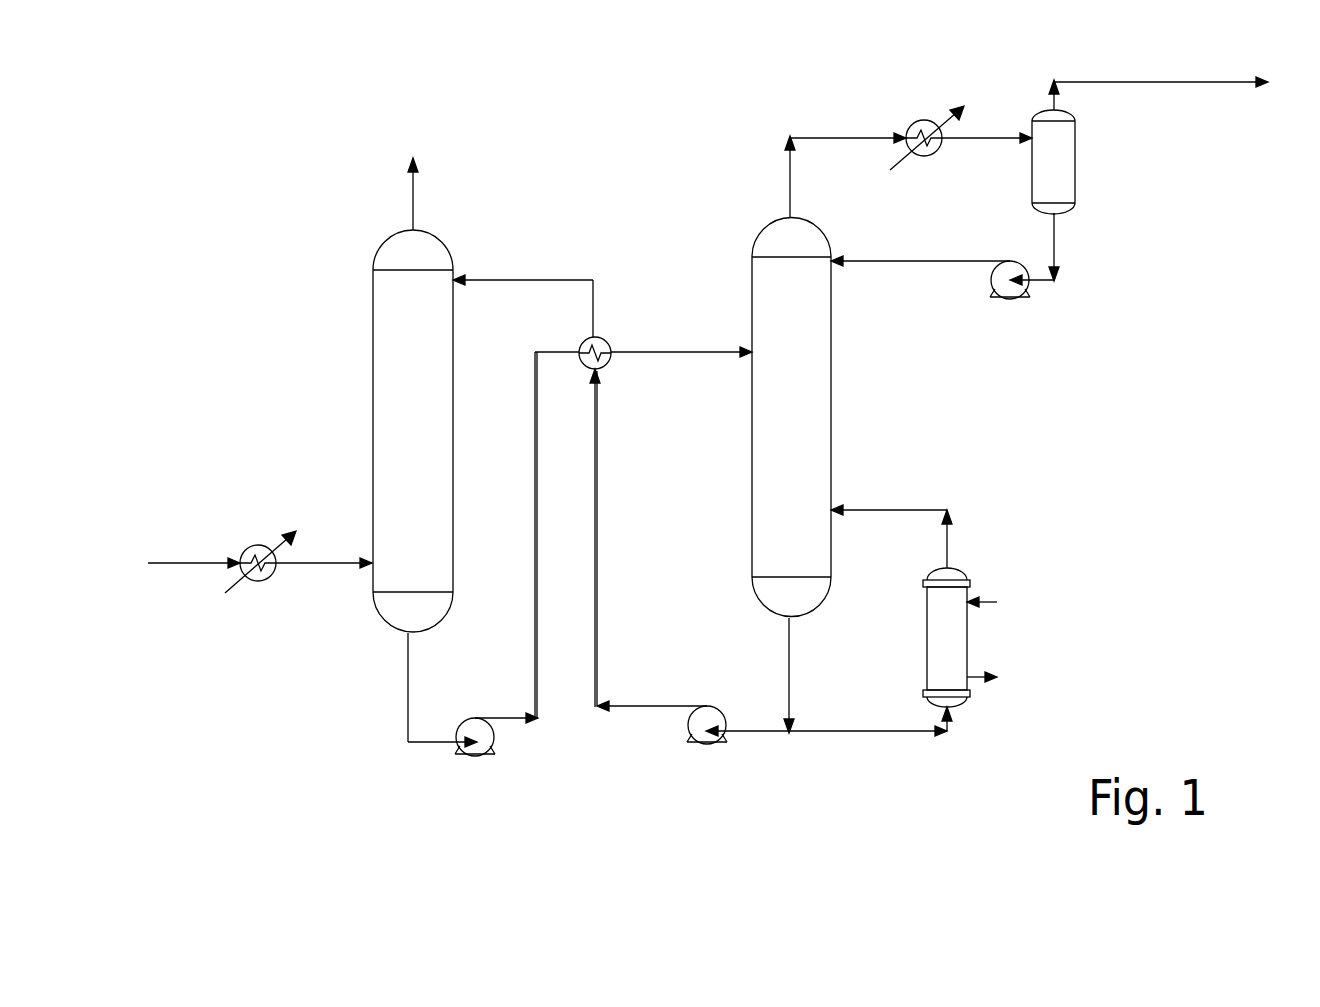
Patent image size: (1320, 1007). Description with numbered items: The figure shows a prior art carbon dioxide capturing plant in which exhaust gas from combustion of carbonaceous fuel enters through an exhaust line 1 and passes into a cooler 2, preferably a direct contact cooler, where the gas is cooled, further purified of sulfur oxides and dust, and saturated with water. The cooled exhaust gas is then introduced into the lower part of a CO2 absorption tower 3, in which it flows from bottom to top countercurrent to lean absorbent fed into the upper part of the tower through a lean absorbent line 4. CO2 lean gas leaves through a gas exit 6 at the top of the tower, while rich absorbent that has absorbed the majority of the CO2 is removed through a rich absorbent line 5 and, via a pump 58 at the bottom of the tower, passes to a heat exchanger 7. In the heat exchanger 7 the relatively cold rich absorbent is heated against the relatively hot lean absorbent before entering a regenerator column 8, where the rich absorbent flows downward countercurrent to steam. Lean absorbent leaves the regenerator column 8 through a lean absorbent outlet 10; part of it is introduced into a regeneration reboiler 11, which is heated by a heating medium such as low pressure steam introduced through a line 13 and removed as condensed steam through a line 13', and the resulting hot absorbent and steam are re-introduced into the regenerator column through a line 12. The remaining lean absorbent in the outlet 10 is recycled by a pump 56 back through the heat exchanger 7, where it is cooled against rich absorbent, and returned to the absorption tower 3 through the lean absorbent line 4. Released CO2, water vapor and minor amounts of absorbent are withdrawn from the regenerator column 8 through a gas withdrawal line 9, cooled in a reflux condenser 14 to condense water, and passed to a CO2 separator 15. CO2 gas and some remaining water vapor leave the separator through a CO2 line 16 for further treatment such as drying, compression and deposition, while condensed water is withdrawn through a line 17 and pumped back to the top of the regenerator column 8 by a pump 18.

The exhaust line 1 is at (174, 570).
The cooler 2 is at (266, 582).
The CO2 absorption tower 3 is at (413, 431).
The lean absorbent line 4 is at (505, 273).
The rich absorbent line 5 is at (413, 693).
The gas exit 6 is at (403, 200).
The heat exchanger 7 is at (607, 340).
The regenerator column 8 is at (791, 417).
The gas withdrawal line 9 is at (783, 176).
The lean absorbent outlet 10 is at (790, 688).
The regeneration reboiler 11 is at (946, 652).
The line 12 is at (943, 505).
The line 13 is at (1011, 600).
The line 13' is at (1015, 695).
The reflux condenser 14 is at (913, 152).
The CO2 separator 15 is at (1053, 162).
The CO2 line 16 is at (1193, 88).
The line 17 is at (1055, 252).
The pump 18 is at (1003, 290).
The pump 56 is at (695, 728).
The pump 58 is at (482, 738).